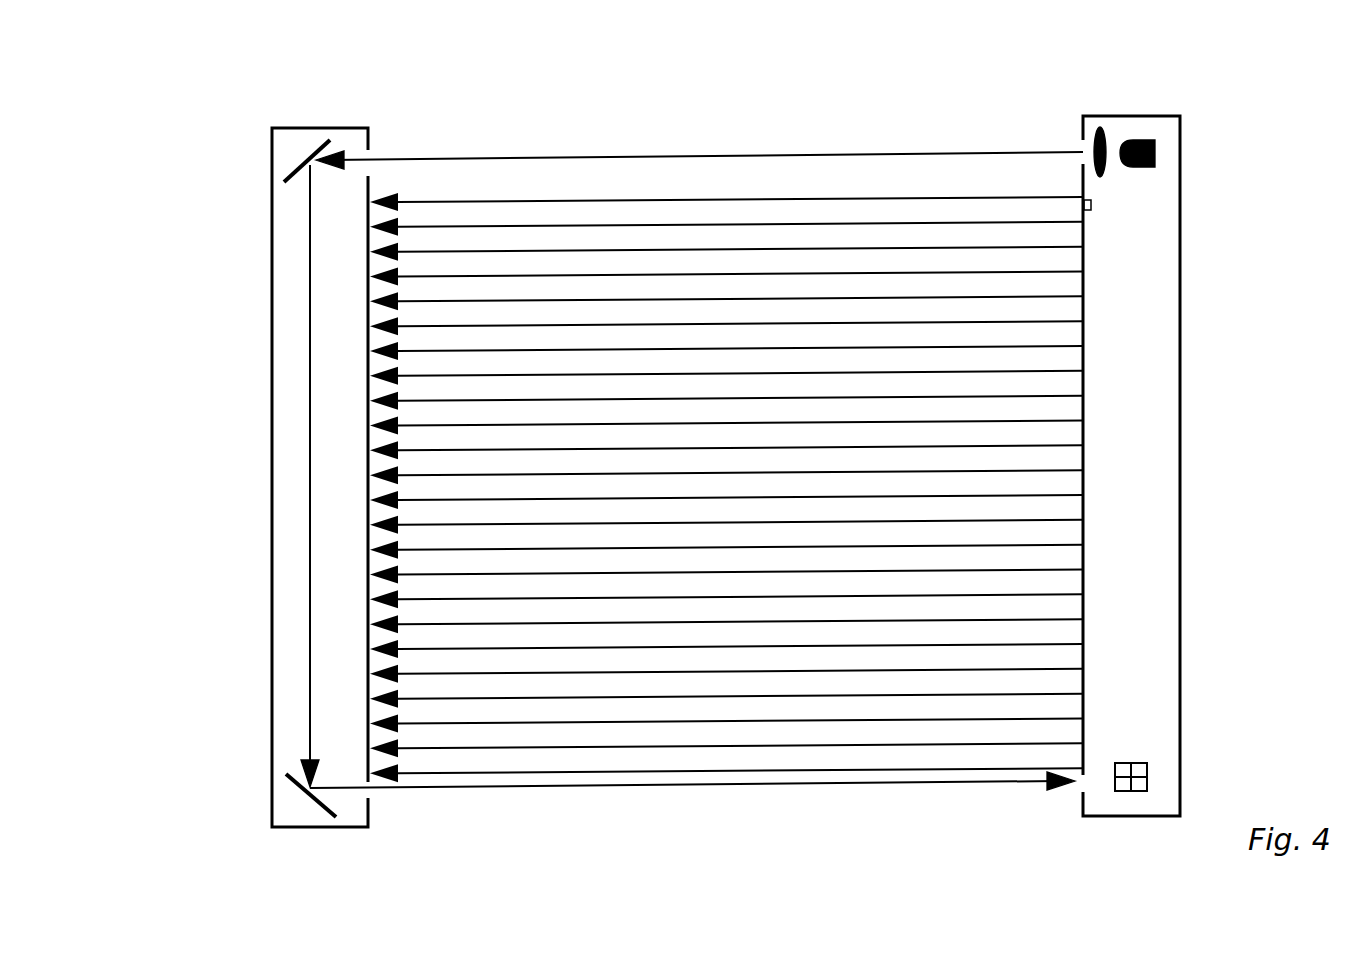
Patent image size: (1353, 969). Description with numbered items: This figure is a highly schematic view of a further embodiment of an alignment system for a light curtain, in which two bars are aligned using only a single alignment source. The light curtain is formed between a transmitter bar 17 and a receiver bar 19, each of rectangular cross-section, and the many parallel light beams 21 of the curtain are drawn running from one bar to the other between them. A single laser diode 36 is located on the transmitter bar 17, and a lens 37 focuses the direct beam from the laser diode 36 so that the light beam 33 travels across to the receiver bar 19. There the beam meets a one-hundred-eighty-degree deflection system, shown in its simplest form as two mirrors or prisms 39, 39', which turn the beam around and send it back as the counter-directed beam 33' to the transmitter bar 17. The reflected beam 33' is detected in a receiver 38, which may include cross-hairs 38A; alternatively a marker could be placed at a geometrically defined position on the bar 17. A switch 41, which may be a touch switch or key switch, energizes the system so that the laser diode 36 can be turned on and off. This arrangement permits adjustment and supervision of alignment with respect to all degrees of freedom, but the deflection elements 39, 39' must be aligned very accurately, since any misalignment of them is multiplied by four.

The transmitter bar 17 is at (1180, 313).
The receiver bar 19 is at (272, 405).
The scanning light beams 21 is at (828, 245).
The light beam 33 is at (699, 120).
The counter-directed beam 33' is at (692, 820).
The laser diode 36 is at (1142, 136).
The lens 37 is at (1101, 128).
The receiver 38 is at (1147, 777).
The cross-hairs 38A is at (1128, 782).
The mirror or prism 39 is at (258, 164).
The mirror or prism 39' is at (265, 491).
The switch 41 is at (1092, 205).